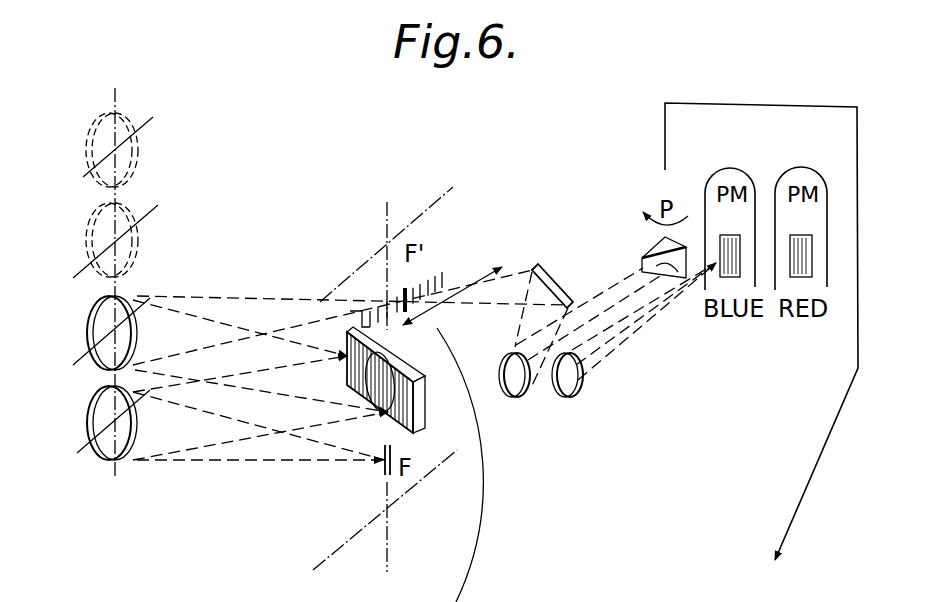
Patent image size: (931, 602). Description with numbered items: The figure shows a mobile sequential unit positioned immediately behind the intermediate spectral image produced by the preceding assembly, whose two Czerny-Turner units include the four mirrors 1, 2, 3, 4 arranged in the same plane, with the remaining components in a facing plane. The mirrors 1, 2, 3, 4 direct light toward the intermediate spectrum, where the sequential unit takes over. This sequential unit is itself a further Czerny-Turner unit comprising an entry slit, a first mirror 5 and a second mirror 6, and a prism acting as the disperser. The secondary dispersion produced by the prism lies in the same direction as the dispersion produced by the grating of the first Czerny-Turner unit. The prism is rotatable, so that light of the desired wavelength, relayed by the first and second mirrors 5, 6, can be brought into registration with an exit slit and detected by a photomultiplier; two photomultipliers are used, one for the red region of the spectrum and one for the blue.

The mirror 1 is at (97, 423).
The mirror 2 is at (97, 333).
The mirror 3 is at (101, 240).
The mirror 4 is at (99, 150).
The first mirror 5 is at (514, 394).
The second mirror 6 is at (567, 394).